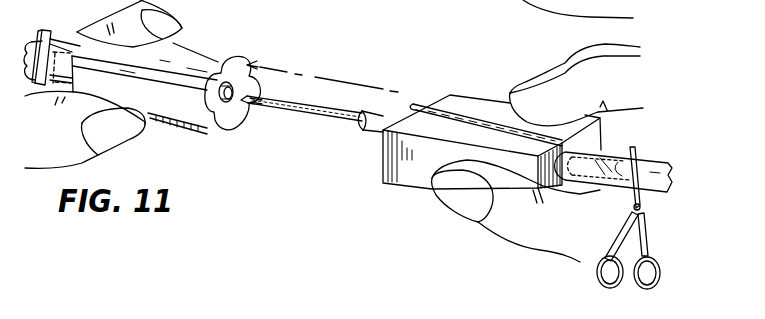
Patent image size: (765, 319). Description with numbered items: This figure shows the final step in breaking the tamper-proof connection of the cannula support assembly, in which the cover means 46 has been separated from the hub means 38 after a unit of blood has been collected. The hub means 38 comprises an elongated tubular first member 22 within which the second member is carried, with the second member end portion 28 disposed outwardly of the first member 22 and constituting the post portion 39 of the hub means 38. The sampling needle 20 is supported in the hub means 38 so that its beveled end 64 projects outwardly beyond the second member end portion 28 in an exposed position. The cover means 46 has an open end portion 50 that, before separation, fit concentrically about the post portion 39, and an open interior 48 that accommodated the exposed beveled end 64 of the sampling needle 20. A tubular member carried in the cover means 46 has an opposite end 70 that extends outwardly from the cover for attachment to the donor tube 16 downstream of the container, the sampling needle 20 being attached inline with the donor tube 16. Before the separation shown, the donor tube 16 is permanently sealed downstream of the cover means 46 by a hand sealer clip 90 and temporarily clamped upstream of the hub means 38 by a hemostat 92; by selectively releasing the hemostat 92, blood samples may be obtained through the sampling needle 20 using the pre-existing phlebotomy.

The donor tube 16 is at (618, 158).
The sampling needle 20 is at (322, 118).
The first member 22 is at (395, 176).
The second member end portion 28 is at (376, 123).
The hub means 38 is at (421, 197).
The post portion 39 is at (400, 111).
The cover means 46 is at (214, 142).
The open interior 48 is at (237, 85).
The open end portion 50 is at (233, 57).
The beveled end 64 is at (261, 105).
The opposite end of tubular member 70 is at (53, 87).
The hand sealer clip 90 is at (50, 30).
The hemostat 92 is at (647, 237).